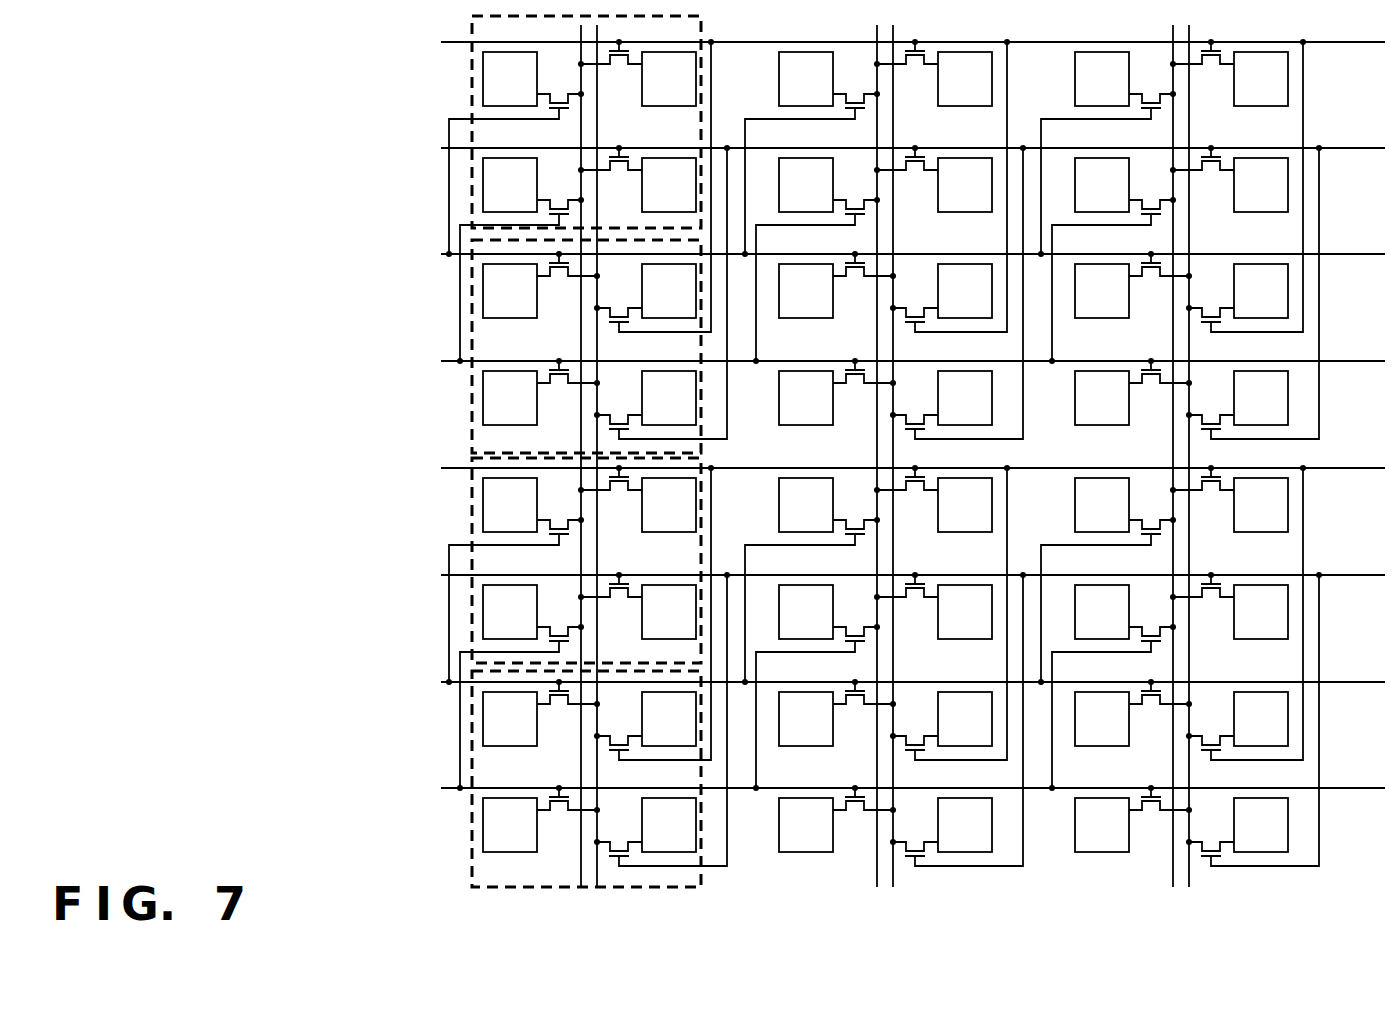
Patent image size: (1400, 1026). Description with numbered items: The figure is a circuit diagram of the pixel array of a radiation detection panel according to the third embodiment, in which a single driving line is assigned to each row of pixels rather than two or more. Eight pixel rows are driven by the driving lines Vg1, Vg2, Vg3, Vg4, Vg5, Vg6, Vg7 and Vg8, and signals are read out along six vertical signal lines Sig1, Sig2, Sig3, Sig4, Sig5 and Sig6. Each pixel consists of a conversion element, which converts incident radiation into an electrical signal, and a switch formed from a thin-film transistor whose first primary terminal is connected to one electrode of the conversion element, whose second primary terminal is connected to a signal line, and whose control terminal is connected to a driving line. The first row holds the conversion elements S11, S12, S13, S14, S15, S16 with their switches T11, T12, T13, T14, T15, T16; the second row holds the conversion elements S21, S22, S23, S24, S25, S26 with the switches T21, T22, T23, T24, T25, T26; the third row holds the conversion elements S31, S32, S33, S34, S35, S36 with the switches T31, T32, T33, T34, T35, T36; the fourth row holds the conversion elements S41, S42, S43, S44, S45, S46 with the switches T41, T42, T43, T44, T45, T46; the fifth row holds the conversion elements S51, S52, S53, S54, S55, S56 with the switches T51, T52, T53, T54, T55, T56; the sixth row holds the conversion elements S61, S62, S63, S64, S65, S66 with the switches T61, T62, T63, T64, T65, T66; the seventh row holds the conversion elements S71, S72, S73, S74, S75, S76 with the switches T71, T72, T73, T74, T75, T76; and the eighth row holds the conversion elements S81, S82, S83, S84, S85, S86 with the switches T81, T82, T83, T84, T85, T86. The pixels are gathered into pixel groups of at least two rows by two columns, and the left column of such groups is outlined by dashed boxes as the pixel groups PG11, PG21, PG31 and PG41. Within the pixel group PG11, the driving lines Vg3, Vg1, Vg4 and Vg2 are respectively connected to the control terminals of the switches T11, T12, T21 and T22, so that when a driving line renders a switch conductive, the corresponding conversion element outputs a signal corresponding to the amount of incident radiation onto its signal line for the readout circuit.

The conversion element S11 is at (510, 79).
The conversion element S12 is at (669, 79).
The conversion element S13 is at (806, 79).
The conversion element S14 is at (965, 79).
The conversion element S15 is at (1102, 79).
The conversion element S16 is at (1261, 79).
The conversion element S21 is at (510, 185).
The conversion element S22 is at (669, 185).
The conversion element S23 is at (806, 185).
The conversion element S24 is at (965, 185).
The conversion element S25 is at (1102, 185).
The conversion element S26 is at (1261, 185).
The conversion element S31 is at (510, 291).
The conversion element S32 is at (669, 291).
The conversion element S33 is at (806, 291).
The conversion element S34 is at (965, 291).
The conversion element S35 is at (1102, 291).
The conversion element S36 is at (1261, 291).
The conversion element S41 is at (510, 398).
The conversion element S42 is at (669, 398).
The conversion element S43 is at (806, 398).
The conversion element S44 is at (965, 398).
The conversion element S45 is at (1102, 398).
The conversion element S46 is at (1261, 398).
The conversion element S51 is at (510, 505).
The conversion element S52 is at (669, 505).
The conversion element S53 is at (806, 505).
The conversion element S54 is at (965, 505).
The conversion element S55 is at (1102, 505).
The conversion element S56 is at (1261, 505).
The conversion element S61 is at (510, 612).
The conversion element S62 is at (669, 612).
The conversion element S63 is at (806, 612).
The conversion element S64 is at (965, 612).
The conversion element S65 is at (1102, 612).
The conversion element S66 is at (1261, 612).
The conversion element S71 is at (510, 719).
The conversion element S72 is at (669, 719).
The conversion element S73 is at (806, 719).
The conversion element S74 is at (965, 719).
The conversion element S75 is at (1102, 719).
The conversion element S76 is at (1261, 719).
The conversion element S81 is at (510, 825).
The conversion element S82 is at (669, 825).
The conversion element S83 is at (806, 825).
The conversion element S84 is at (965, 825).
The conversion element S85 is at (1102, 825).
The conversion element S86 is at (1261, 825).
The switch T11 is at (515, 164).
The switch T12 is at (610, 66).
The switch T13 is at (811, 164).
The switch T14 is at (906, 66).
The switch T15 is at (1107, 164).
The switch T16 is at (1202, 66).
The switch T21 is at (520, 271).
The switch T22 is at (610, 172).
The switch T23 is at (816, 271).
The switch T24 is at (906, 172).
The switch T25 is at (1112, 271).
The switch T26 is at (1202, 172).
The switch T31 is at (568, 278).
The switch T32 is at (654, 185).
The switch T33 is at (864, 278).
The switch T34 is at (950, 185).
The switch T35 is at (1160, 278).
The switch T36 is at (1246, 185).
The switch T41 is at (568, 385).
The switch T42 is at (662, 292).
The switch T43 is at (864, 385).
The switch T44 is at (958, 292).
The switch T45 is at (1160, 385).
The switch T46 is at (1254, 292).
The switch T51 is at (515, 591).
The switch T52 is at (610, 492).
The switch T53 is at (811, 591).
The switch T54 is at (906, 492).
The switch T55 is at (1107, 591).
The switch T56 is at (1202, 492).
The switch T61 is at (520, 698).
The switch T62 is at (610, 599).
The switch T63 is at (816, 698).
The switch T64 is at (906, 599).
The switch T65 is at (1112, 698).
The switch T66 is at (1202, 599).
The switch T71 is at (568, 706).
The switch T72 is at (654, 612).
The switch T73 is at (864, 706).
The switch T74 is at (950, 612).
The switch T75 is at (1160, 706).
The switch T76 is at (1246, 612).
The switch T81 is at (568, 812).
The switch T82 is at (662, 719).
The switch T83 is at (864, 812).
The switch T84 is at (958, 719).
The switch T85 is at (1160, 812).
The switch T86 is at (1254, 719).
The driving line Vg1 is at (891, 42).
The driving line Vg2 is at (891, 148).
The driving line Vg3 is at (891, 254).
The driving line Vg4 is at (891, 361).
The driving line Vg5 is at (891, 468).
The driving line Vg6 is at (891, 575).
The driving line Vg7 is at (891, 682).
The driving line Vg8 is at (891, 788).
The signal line Sig1 is at (560, 471).
The signal line Sig2 is at (618, 471).
The signal line Sig3 is at (856, 471).
The signal line Sig4 is at (914, 471).
The signal line Sig5 is at (1152, 471).
The signal line Sig6 is at (1210, 471).
The pixel group PG11 is at (703, 27).
The pixel group PG21 is at (471, 385).
The pixel group PG31 is at (472, 603).
The pixel group PG41 is at (472, 820).